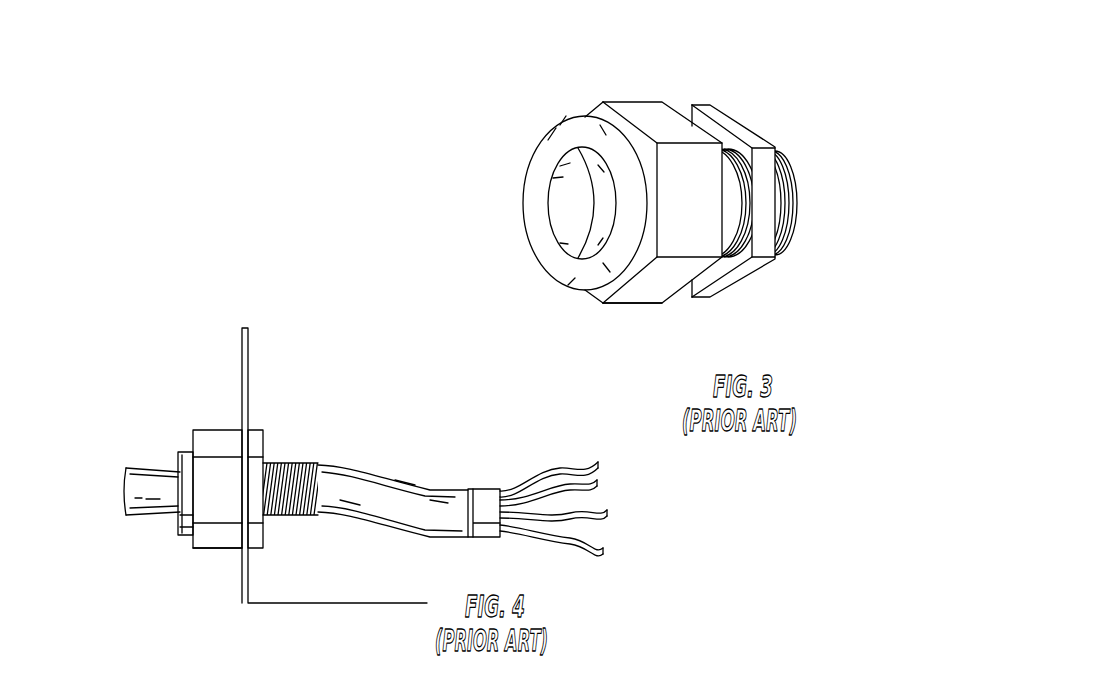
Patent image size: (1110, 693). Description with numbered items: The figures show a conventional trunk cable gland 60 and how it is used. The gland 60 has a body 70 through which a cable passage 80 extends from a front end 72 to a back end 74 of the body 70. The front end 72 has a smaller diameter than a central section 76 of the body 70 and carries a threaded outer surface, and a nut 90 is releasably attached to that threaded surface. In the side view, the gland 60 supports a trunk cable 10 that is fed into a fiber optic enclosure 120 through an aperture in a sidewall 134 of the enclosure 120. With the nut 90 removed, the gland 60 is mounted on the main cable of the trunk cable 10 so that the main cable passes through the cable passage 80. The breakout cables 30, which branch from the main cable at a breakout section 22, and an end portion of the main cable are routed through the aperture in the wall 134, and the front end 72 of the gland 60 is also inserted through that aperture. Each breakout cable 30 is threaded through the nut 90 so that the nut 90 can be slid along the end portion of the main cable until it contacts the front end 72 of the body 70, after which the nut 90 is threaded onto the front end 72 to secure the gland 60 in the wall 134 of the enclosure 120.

In FIG. 4, the trunk cable 10 is at (369, 445).
In FIG. 4, the breakout section 22 is at (487, 489).
In FIG. 4, the breakout cable 30 is at (549, 467).
In FIG. 3, the trunk cable gland 60 is at (655, 192).
In FIG. 4, the trunk cable gland 60 is at (250, 466).
In FIG. 3, the body 70 is at (633, 108).
In FIG. 4, the body 70 is at (217, 489).
In FIG. 3, the front end 72 is at (793, 180).
In FIG. 4, the front end 72 is at (297, 464).
In FIG. 3, the back end 74 is at (560, 137).
In FIG. 4, the back end 74 is at (178, 532).
In FIG. 3, the central section 76 is at (637, 297).
In FIG. 4, the central section 76 is at (207, 550).
In FIG. 3, the cable passage 80 is at (531, 197).
In FIG. 3, the nut 90 is at (771, 243).
In FIG. 4, the nut 90 is at (262, 535).
In FIG. 4, the fiber optic enclosure 120 is at (376, 370).
In FIG. 4, the sidewall 134 is at (246, 328).